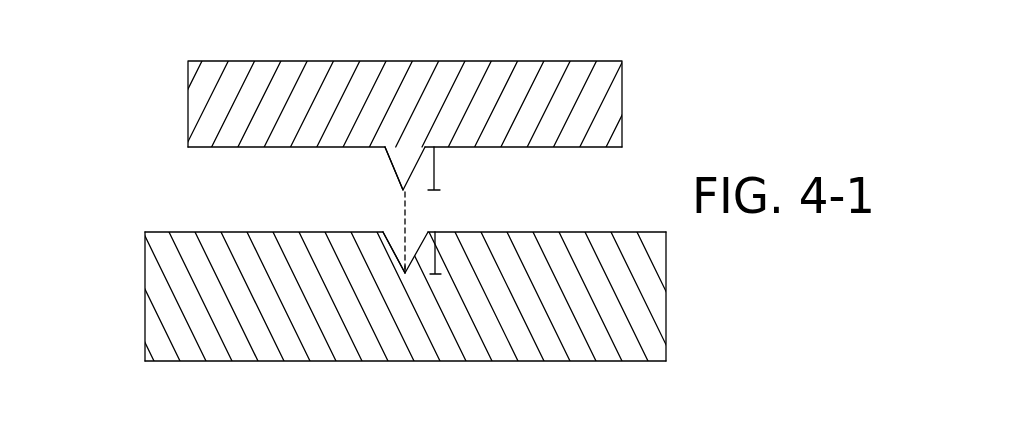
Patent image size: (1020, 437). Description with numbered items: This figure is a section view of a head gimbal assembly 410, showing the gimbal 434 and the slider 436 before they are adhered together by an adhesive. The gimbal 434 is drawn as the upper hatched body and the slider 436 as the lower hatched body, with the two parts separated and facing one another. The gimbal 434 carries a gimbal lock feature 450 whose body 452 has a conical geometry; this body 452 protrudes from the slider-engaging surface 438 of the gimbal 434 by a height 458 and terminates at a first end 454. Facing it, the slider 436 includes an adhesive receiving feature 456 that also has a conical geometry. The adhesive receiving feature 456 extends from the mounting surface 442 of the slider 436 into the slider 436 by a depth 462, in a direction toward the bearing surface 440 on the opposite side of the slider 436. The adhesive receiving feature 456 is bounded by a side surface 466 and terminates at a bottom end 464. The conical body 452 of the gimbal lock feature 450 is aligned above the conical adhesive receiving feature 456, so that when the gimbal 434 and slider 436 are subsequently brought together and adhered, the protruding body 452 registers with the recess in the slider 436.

The head gimbal assembly 410 is at (692, 105).
The gimbal 434 is at (188, 80).
The slider 436 is at (145, 318).
The slider-engaging surface 438 is at (200, 148).
The bearing surface 440 is at (607, 361).
The mounting surface 442 is at (180, 232).
The gimbal lock feature 450 is at (370, 162).
The body 452 is at (407, 160).
The first end 454 is at (404, 192).
The adhesive receiving feature 456 is at (415, 280).
The height 458 is at (436, 150).
The depth 462 is at (437, 254).
The bottom end 464 is at (405, 275).
The side surface 466 is at (383, 253).